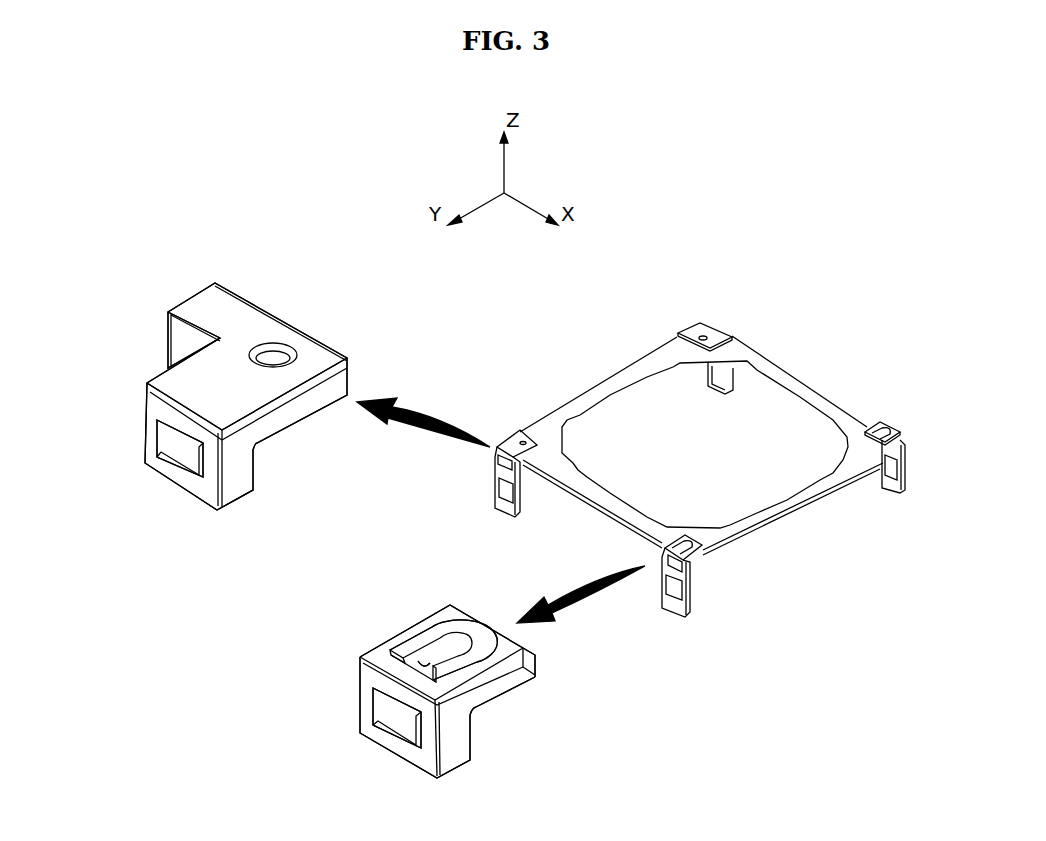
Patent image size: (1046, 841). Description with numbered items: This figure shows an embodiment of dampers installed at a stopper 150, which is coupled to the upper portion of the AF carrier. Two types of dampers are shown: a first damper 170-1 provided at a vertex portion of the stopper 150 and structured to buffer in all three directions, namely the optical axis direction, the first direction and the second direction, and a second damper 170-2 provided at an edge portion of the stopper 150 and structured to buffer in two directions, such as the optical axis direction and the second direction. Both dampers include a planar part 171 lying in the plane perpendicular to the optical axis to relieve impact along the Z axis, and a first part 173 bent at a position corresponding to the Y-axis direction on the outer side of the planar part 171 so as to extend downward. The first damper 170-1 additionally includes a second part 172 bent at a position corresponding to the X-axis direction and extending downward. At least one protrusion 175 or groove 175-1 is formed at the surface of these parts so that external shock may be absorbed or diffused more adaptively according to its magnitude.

The stopper 150 is at (655, 362).
The first damper 170-1 is at (250, 277).
The second damper 170-2 is at (882, 422).
The planar part 171 is at (205, 300).
The second part 172 is at (173, 340).
The first part 173 is at (182, 477).
The protrusion 175 is at (165, 447).
The groove 175-1 is at (425, 662).